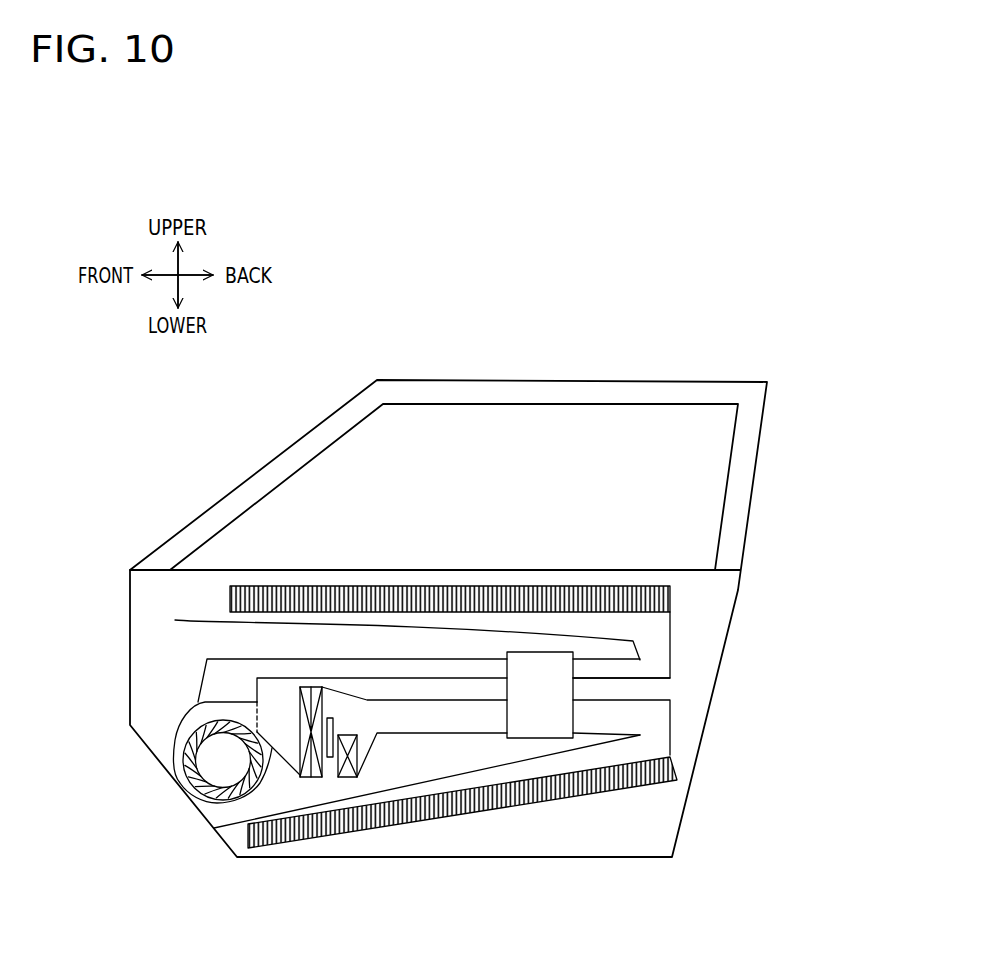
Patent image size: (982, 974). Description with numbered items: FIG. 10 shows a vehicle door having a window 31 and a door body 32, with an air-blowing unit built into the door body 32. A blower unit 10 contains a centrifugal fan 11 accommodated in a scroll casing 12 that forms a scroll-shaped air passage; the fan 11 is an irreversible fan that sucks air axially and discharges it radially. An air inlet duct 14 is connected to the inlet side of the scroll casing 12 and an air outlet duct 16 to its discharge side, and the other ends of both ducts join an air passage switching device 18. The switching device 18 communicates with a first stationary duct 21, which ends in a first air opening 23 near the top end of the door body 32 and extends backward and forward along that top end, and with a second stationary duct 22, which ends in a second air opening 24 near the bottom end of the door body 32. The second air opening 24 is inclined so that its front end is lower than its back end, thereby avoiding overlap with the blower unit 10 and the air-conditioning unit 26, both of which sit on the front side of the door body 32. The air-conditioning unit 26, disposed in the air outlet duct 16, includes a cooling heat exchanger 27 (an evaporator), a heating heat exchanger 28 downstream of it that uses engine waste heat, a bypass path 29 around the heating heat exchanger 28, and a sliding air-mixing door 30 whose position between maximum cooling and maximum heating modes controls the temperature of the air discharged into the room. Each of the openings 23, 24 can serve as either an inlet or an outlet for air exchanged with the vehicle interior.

The blower unit 10 is at (191, 789).
The fan 11 is at (182, 744).
The scroll casing 12 is at (185, 714).
The air inlet duct 14 is at (175, 620).
The air outlet duct 16 is at (462, 733).
The air passage switching device 18 is at (537, 738).
The first stationary duct 21 is at (662, 640).
The second stationary duct 22 is at (657, 738).
The first air opening 23 is at (607, 587).
The second air opening 24 is at (600, 793).
The air-conditioning unit 26 is at (290, 770).
The cooling heat exchanger 27 is at (298, 690).
The heating heat exchanger 28 is at (345, 777).
The bypass path 29 is at (347, 702).
The air-mixing door 30 is at (330, 760).
The window 31 is at (368, 476).
The door body 32 is at (165, 630).